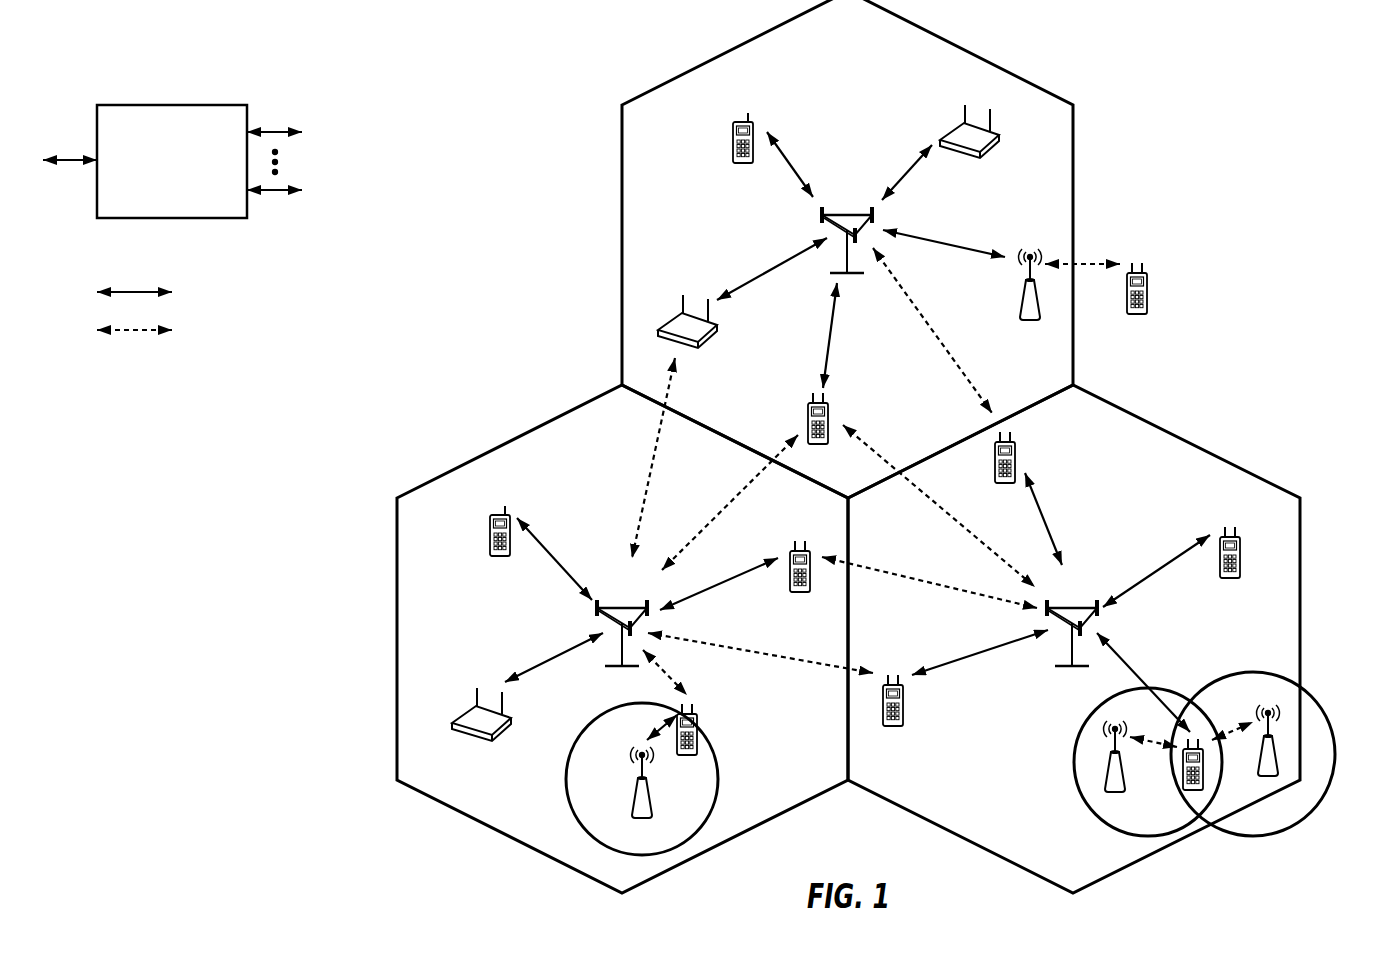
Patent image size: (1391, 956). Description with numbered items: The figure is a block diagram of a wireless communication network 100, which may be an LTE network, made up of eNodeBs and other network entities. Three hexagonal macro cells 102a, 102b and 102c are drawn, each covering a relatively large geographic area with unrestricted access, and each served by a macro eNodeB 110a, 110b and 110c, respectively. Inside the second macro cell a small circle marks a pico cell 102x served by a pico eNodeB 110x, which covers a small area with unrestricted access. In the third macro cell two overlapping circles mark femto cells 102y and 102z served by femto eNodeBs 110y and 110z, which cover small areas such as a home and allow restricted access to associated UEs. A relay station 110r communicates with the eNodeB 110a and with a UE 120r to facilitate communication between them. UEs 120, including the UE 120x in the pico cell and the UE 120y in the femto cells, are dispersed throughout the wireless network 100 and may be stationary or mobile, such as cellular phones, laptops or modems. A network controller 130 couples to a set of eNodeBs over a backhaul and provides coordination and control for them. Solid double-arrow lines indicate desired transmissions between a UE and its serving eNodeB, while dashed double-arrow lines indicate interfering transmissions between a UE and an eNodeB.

The wireless communication network 100 is at (1226, 65).
The macro cell 102a is at (960, 48).
The macro cell 102b is at (507, 443).
The macro cell 102c is at (1185, 441).
The pico cell 102x is at (590, 722).
The femto cell 102y is at (1080, 730).
The femto cell 102z is at (1248, 672).
The macro eNodeB 110a is at (843, 213).
The macro eNodeB 110b is at (620, 606).
The macro eNodeB 110c is at (1072, 606).
The relay station 110r is at (1022, 300).
The pico eNodeB 110x is at (651, 805).
The femto eNodeB 110y is at (1125, 777).
The femto eNodeB 110z is at (1278, 760).
The UE 120 is at (733, 130).
The UE 120x is at (697, 723).
The UE 120r is at (1147, 302).
The UE 120y is at (1183, 783).
The network controller 130 is at (166, 104).